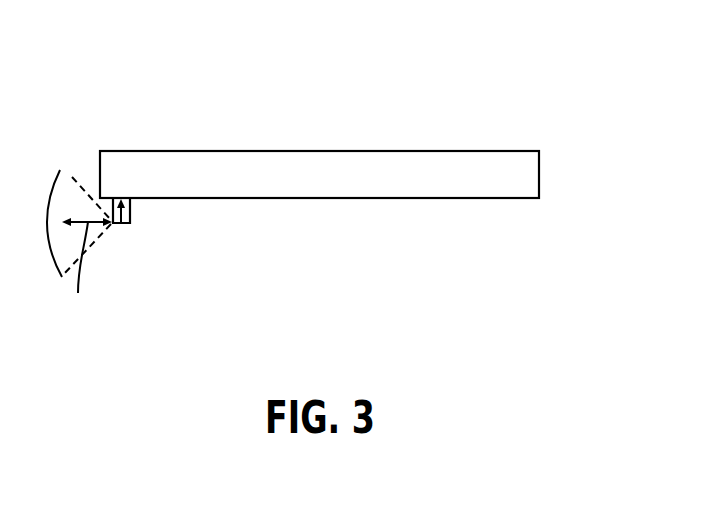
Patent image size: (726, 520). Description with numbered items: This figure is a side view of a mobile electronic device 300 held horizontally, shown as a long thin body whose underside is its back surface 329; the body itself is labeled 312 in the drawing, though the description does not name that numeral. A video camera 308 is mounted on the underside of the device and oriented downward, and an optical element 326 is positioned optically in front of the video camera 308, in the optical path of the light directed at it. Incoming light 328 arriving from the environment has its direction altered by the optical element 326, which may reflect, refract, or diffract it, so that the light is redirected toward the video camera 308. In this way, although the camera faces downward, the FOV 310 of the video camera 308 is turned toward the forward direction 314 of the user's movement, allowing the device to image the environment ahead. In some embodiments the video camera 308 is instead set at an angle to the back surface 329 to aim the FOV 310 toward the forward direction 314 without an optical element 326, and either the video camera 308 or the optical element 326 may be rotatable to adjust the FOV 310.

The mobile electronic device 300 is at (526, 48).
The video camera 308 is at (131, 210).
The FOV 310 is at (70, 177).
The substrate / waveguide 312 is at (193, 151).
The forward direction 314 is at (72, 273).
The optical element 326 is at (147, 247).
The incoming light 328 is at (88, 222).
The back surface 329 is at (465, 198).